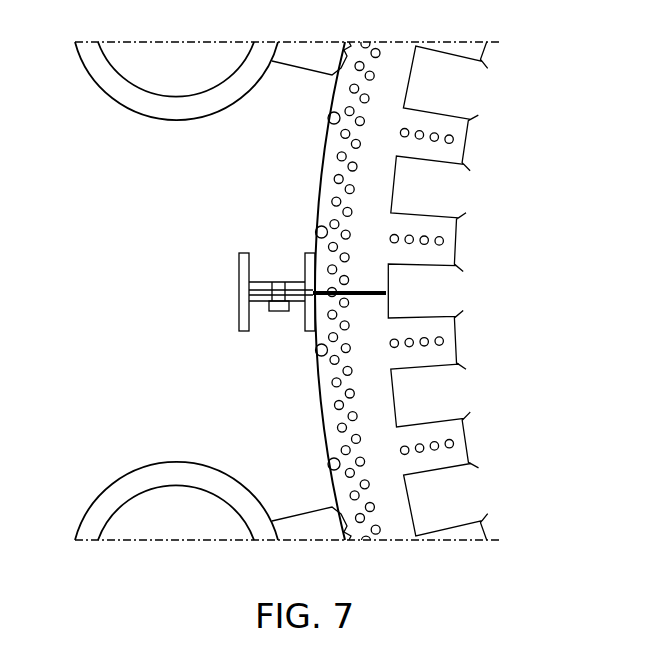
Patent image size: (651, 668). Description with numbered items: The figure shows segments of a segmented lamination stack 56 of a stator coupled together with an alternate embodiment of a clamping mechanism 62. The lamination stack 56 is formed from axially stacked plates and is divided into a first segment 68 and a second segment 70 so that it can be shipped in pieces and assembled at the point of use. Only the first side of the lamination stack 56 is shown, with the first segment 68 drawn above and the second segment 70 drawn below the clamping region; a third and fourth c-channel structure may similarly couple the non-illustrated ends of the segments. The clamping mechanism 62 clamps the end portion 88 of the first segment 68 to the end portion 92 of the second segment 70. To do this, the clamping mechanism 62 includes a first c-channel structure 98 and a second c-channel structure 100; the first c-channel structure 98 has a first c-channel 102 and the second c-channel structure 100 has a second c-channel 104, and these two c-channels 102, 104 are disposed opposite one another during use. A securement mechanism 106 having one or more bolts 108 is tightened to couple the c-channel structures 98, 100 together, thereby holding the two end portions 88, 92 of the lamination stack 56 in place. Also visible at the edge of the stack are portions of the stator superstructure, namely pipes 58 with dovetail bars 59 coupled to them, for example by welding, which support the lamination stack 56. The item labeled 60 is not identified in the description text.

The segmented lamination stack 56 is at (445, 292).
The pipes 58 is at (98, 87).
The dovetail bars 59 is at (320, 53).
The valve stem 60 is at (389, 294).
The clamping mechanism 62 is at (236, 306).
The first segment 68 is at (470, 140).
The second segment 70 is at (464, 437).
The end portion 88 is at (322, 186).
The end portion 92 is at (320, 311).
The first c-channel structure 98 is at (237, 280).
The second c-channel structure 100 is at (238, 297).
The first c-channel 102 is at (283, 272).
The second c-channel 104 is at (259, 308).
The securement mechanism 106 is at (276, 323).
The bolts 108 is at (283, 312).